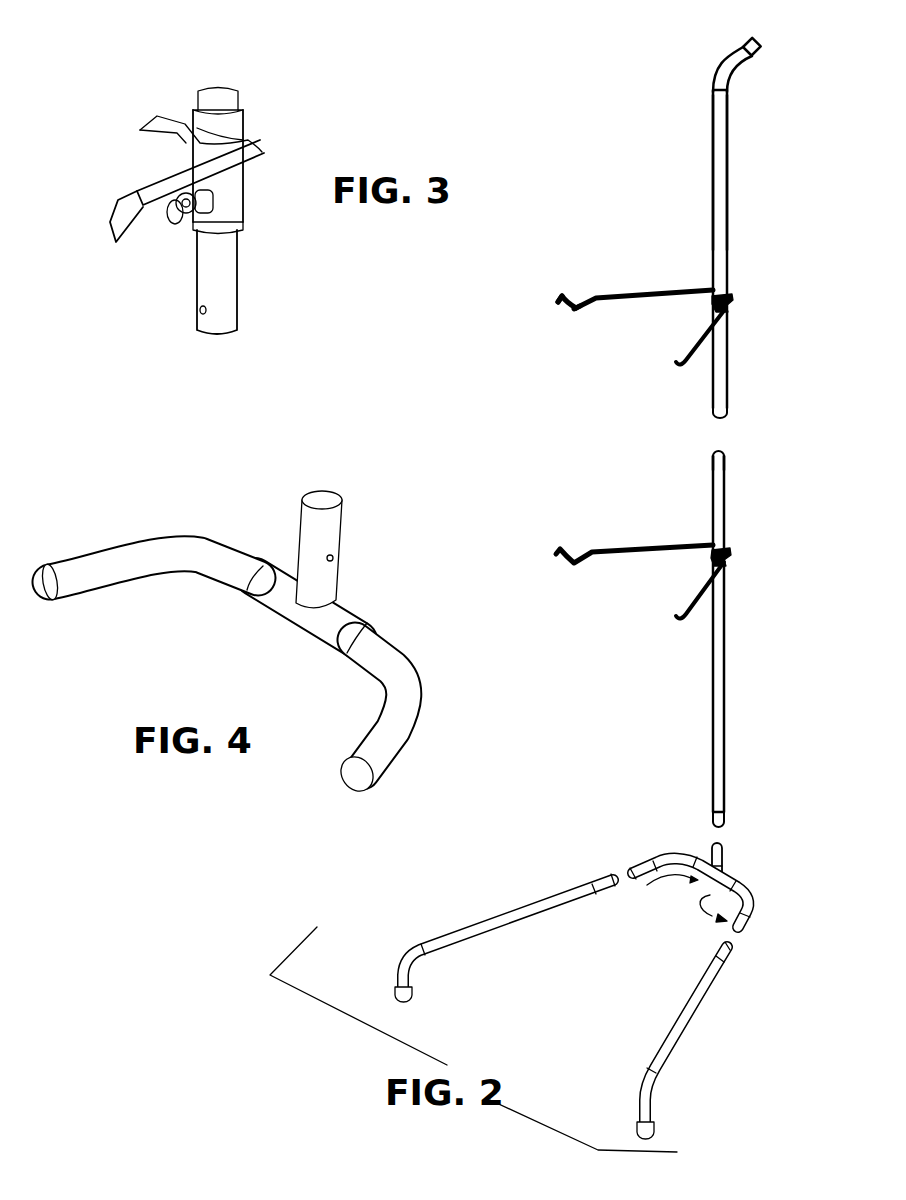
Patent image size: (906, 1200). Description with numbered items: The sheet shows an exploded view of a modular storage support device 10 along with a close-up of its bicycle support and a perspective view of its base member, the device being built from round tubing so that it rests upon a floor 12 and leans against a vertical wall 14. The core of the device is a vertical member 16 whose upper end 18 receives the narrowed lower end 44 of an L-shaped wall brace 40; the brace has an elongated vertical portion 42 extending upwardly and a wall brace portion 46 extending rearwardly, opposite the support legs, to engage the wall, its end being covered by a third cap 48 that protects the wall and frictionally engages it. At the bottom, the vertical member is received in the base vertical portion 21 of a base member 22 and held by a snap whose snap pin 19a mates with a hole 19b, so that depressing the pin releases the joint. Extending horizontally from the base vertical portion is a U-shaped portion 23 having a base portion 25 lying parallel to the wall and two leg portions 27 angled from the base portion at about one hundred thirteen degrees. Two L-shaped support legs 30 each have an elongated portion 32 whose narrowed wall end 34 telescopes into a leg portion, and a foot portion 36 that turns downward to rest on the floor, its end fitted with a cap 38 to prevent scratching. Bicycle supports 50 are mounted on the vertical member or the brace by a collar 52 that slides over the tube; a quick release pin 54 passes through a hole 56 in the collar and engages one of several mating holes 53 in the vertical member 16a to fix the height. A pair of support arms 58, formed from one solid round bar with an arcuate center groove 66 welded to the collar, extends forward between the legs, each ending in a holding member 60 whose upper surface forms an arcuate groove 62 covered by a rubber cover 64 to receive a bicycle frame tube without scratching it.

In FIG. 2, the modular storage support device 10 is at (758, 118).
In FIG. 2, the floor 12 is at (583, 1014).
In FIG. 2, the vertical wall 14 is at (886, 498).
In FIG. 2, the vertical member 16 is at (754, 660).
In FIG. 3, the vertical member 16a is at (220, 86).
In FIG. 2, the upper end 18 is at (713, 452).
In FIG. 2, the snap pin 19a is at (724, 825).
In FIG. 2, the hole 19b is at (727, 862).
In FIG. 2, the base vertical portion 21 is at (713, 855).
In FIG. 3, the base member 22 is at (285, 155).
In FIG. 4, the base member 22 is at (355, 515).
In FIG. 2, the base member 22 is at (778, 880).
In FIG. 4, the U-shaped portion 23 is at (205, 583).
In FIG. 2, the U-shaped portion 23 is at (757, 897).
In FIG. 4, the base portion 25 is at (363, 627).
In FIG. 3, the leg portions 27 is at (137, 191).
In FIG. 4, the leg portions 27 is at (123, 543).
In FIG. 2, the leg portions 27 is at (650, 860).
In FIG. 2, the L-shaped support legs 30 is at (413, 947).
In FIG. 2, the elongated portion 32 is at (493, 937).
In FIG. 2, the narrowed wall end 34 is at (717, 947).
In FIG. 2, the foot portion 36 is at (398, 973).
In FIG. 2, the caps 38 is at (413, 993).
In FIG. 2, the L-shaped wall brace 40 is at (713, 126).
In FIG. 2, the elongated vertical portion 42 is at (727, 178).
In FIG. 2, the narrowed lower end 44 is at (727, 410).
In FIG. 2, the wall brace portion 46 is at (725, 57).
In FIG. 2, the third cap 48 is at (757, 40).
In FIG. 2, the bicycle supports 50 is at (761, 288).
In FIG. 3, the collar 52 is at (233, 121).
In FIG. 2, the collar 52 is at (712, 300).
In FIG. 3, the mating holes 53 is at (238, 307).
In FIG. 3, the quick release pin 54 is at (178, 224).
In FIG. 2, the quick release pin 54 is at (713, 573).
In FIG. 3, the hole 56 is at (215, 197).
In FIG. 2, the support arms 58 is at (680, 287).
In FIG. 2, the holding member 60 is at (577, 307).
In FIG. 2, the arcuate groove 62 is at (573, 308).
In FIG. 2, the rubber cover 64 is at (560, 296).
In FIG. 2, the arcuate center groove 66 is at (725, 545).